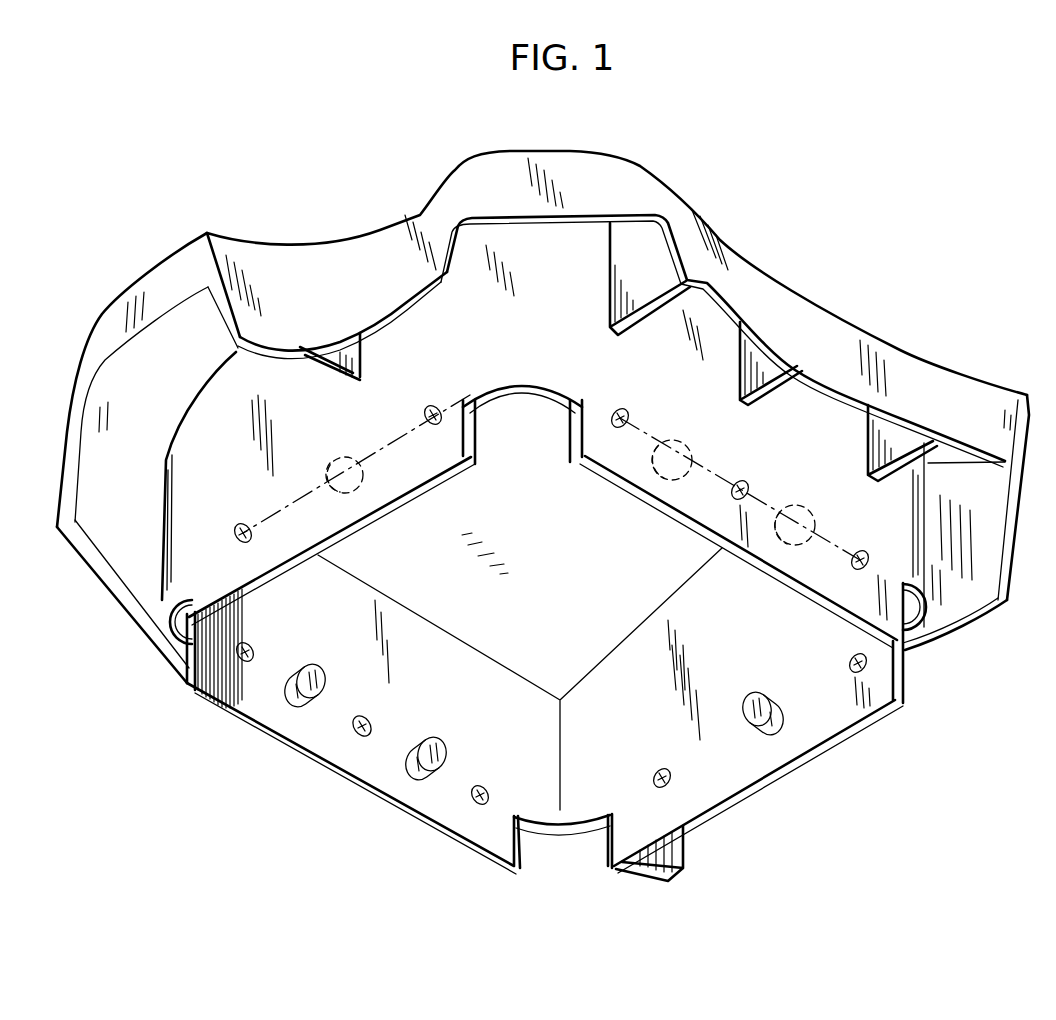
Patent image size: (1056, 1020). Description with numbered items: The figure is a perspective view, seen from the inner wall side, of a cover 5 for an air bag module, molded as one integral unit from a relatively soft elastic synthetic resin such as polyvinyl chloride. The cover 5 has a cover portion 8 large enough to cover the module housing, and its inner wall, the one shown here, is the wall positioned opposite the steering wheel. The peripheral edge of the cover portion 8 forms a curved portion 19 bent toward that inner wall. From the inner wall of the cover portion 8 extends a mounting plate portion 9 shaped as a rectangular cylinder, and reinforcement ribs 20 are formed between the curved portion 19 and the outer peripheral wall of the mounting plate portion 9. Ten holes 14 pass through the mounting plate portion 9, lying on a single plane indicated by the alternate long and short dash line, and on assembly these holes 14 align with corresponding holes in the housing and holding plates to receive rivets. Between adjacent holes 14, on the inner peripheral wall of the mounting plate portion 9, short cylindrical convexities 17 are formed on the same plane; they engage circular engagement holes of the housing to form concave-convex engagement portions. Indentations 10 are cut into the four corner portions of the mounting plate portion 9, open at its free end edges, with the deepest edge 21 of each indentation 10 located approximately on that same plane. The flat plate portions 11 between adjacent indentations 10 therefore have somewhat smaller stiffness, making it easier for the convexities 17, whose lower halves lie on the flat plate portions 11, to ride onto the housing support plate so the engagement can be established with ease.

The cover 5 is at (678, 176).
The cover portion 8 is at (121, 310).
The mounting plate portion 9 is at (201, 411).
The indentation 10 is at (472, 425).
The flat plate portion 11 is at (337, 517).
The hole 14 is at (425, 420).
The short cylindrical convexity 17 is at (328, 468).
The curved portion 19 is at (865, 342).
The reinforcement rib 20 is at (368, 350).
The deepest edge 21 is at (545, 400).